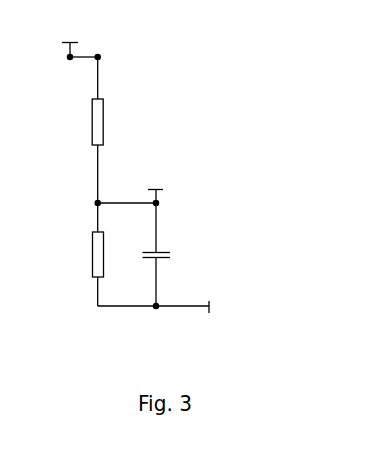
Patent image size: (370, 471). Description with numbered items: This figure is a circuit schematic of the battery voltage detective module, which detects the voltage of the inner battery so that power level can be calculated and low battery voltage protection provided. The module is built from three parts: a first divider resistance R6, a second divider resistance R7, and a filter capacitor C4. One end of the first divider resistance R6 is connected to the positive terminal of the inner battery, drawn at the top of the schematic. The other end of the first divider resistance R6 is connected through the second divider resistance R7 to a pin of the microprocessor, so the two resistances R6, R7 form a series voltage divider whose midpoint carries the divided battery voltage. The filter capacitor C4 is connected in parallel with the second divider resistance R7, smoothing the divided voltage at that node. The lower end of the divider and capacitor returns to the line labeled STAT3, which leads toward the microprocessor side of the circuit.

The first divider resistance R6 is at (82, 122).
The second divider resistance R7 is at (83, 254).
The filter capacitor C4 is at (172, 256).
The status output terminal STAT3 is at (242, 311).